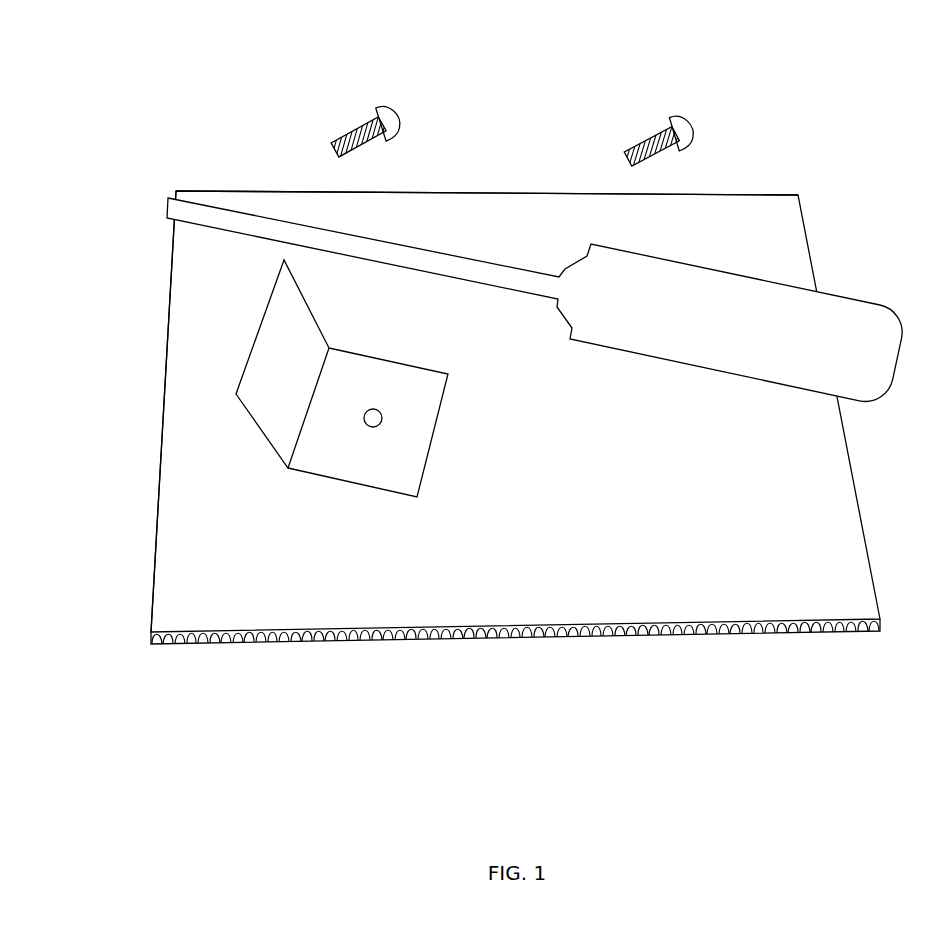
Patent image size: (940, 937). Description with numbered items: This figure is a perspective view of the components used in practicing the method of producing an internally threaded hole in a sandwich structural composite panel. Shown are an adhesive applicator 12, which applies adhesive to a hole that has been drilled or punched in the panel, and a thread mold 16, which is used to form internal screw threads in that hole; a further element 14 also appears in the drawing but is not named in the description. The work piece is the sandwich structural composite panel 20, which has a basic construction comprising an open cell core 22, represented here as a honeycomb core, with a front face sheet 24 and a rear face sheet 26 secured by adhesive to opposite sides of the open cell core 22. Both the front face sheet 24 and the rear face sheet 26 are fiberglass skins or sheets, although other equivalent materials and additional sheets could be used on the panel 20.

The adhesive applicator 12 is at (840, 323).
The screw 14 is at (672, 118).
The thread mold 16 is at (377, 107).
The sandwich structural composite panel 20 is at (158, 517).
The open cell core 22 is at (147, 636).
The front face sheet 24 is at (157, 578).
The rear face sheet 26 is at (193, 645).